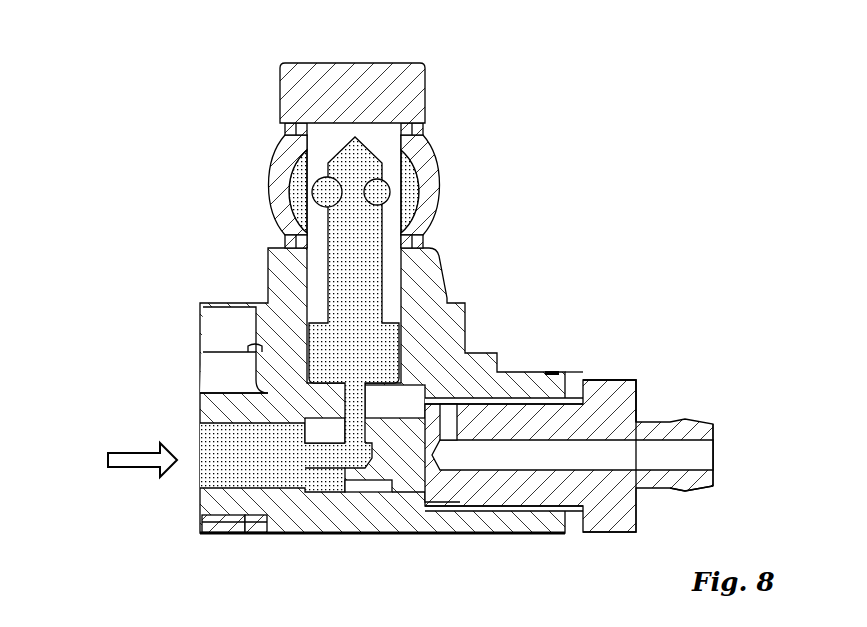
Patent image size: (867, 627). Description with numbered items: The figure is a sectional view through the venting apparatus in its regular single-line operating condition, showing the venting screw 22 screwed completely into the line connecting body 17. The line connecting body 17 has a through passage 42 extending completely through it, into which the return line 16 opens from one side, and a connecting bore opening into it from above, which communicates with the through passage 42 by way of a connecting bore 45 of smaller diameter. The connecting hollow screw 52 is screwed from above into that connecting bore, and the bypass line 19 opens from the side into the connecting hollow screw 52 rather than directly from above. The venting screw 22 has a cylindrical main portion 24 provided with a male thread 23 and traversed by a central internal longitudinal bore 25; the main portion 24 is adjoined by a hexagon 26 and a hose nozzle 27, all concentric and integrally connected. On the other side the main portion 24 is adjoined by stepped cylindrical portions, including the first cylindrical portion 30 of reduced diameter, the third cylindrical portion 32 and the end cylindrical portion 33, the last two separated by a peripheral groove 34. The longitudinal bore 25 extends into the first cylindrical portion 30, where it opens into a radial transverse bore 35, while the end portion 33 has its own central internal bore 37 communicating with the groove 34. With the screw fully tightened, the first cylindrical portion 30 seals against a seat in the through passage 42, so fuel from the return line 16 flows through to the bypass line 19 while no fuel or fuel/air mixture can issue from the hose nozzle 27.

The return line 16 is at (103, 460).
The line connecting body 17 is at (448, 320).
The bypass line 19 is at (437, 178).
The venting screw 22 is at (656, 381).
The male thread 23 is at (540, 513).
The cylindrical main portion 24 is at (520, 487).
The internal longitudinal bore 25 is at (610, 460).
The hexagon 26 is at (614, 403).
The hose nozzle 27 is at (698, 480).
The first cylindrical portion 30 is at (443, 495).
The third cylindrical portion 32 is at (673, 292).
The cylindrical portion forming the right-hand end 33 is at (323, 482).
The groove 34 is at (372, 483).
The transverse bore 35 is at (450, 437).
The central internal bore 37 is at (315, 457).
The through passage 42 is at (286, 457).
The connecting bore 45 is at (350, 403).
The connecting hollow screw 52 is at (372, 82).